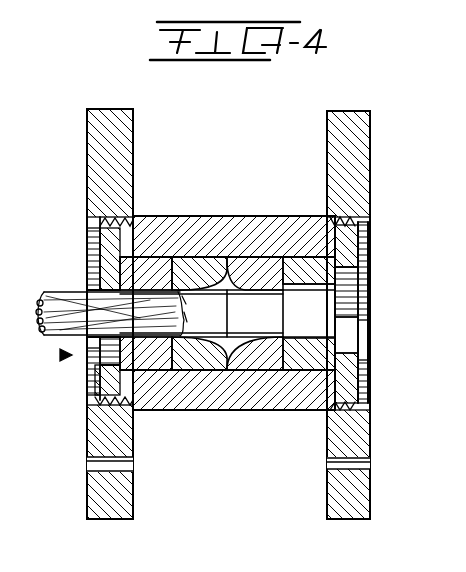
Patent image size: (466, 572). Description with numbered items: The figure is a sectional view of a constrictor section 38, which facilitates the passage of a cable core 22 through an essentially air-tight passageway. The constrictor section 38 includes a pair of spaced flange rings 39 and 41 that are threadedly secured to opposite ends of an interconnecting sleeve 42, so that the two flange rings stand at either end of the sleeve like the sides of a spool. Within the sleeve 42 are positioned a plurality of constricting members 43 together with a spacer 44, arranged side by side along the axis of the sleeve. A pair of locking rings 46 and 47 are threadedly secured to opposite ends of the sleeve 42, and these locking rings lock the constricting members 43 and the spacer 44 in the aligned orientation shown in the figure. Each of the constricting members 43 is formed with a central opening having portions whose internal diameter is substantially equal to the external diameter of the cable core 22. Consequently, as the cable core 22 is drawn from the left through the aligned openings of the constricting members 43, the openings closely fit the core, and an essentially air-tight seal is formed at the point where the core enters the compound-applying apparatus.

The cable core 22 is at (66, 289).
The constrictor section 38 is at (373, 154).
The flange ring 39 is at (108, 166).
The flange ring 41 is at (331, 148).
The interconnecting sleeve 42 is at (216, 222).
The constricting members 43 is at (175, 392).
The spacer 44 is at (303, 372).
The locking ring 46 is at (98, 222).
The locking ring 47 is at (368, 248).